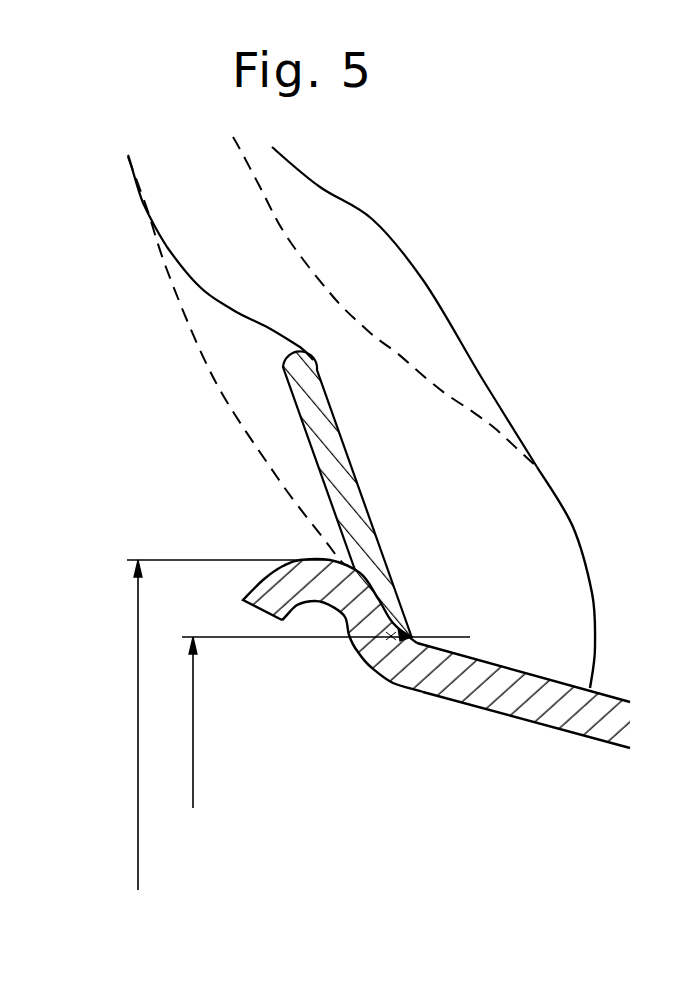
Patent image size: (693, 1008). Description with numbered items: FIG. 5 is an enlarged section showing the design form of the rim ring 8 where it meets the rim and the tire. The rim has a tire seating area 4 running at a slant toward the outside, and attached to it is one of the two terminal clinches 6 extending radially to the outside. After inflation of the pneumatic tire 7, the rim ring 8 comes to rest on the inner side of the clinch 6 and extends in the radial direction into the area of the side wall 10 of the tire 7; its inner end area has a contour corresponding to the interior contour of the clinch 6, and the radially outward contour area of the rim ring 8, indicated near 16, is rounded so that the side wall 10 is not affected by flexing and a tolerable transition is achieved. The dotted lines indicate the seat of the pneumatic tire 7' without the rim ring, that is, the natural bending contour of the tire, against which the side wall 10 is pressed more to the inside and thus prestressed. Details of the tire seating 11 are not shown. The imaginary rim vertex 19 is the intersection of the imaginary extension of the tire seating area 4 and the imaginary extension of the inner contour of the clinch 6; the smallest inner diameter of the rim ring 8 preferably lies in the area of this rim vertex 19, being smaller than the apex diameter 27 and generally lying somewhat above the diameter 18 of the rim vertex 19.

The tire seating area 4 is at (550, 673).
The terminal clinch 6 is at (273, 592).
The pneumatic tire 7 is at (332, 298).
The pneumatic tire without rim ring 7' is at (319, 351).
The rim ring 8 is at (318, 473).
The side wall 10 is at (450, 358).
The tire seating 11 is at (533, 555).
The rounded end of bar 16 is at (293, 353).
The diameter of the rim vertex 18 is at (195, 750).
The rim vertex 19 is at (392, 636).
The apex diameter 27 is at (137, 827).